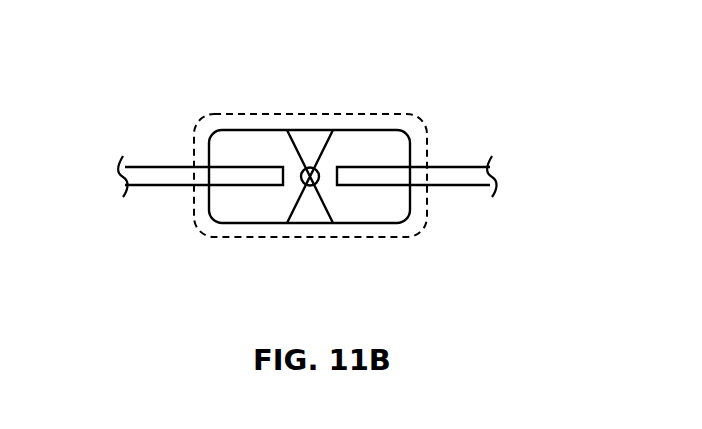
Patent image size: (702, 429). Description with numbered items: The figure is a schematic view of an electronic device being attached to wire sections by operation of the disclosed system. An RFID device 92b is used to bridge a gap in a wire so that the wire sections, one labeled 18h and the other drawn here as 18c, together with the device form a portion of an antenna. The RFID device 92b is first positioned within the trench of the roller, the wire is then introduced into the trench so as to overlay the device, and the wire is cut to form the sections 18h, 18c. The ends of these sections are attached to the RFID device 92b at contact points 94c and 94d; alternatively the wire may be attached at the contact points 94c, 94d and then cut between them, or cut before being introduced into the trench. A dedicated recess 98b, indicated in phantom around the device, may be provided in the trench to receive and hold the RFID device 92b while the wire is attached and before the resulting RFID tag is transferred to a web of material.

The wire section 18h is at (153, 177).
The conduit 18c is at (458, 177).
The RFID device 92b is at (247, 203).
The contact point 94c is at (240, 165).
The contact point 94d is at (360, 165).
The dedicated recess 98b is at (383, 112).